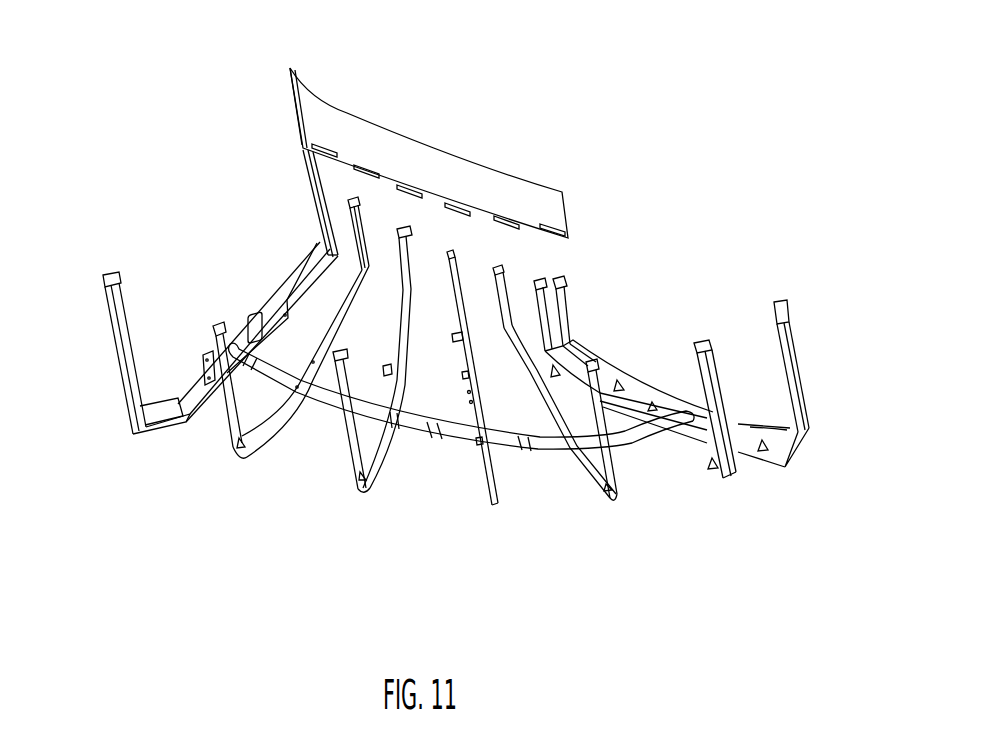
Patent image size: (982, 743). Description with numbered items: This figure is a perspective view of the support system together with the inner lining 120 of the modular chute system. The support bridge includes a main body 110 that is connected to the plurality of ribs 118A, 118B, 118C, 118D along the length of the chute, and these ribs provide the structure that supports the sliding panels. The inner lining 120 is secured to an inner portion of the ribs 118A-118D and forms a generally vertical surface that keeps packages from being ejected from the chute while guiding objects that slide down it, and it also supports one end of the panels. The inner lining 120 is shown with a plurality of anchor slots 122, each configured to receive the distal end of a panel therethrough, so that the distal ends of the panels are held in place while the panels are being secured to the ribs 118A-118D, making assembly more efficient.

The main body 110 is at (545, 452).
The rib 118A is at (122, 373).
The rib 118B is at (236, 448).
The rib 118C is at (482, 488).
The rib 118D is at (793, 452).
The inner lining 120 is at (429, 157).
The anchor slot 122 is at (408, 185).